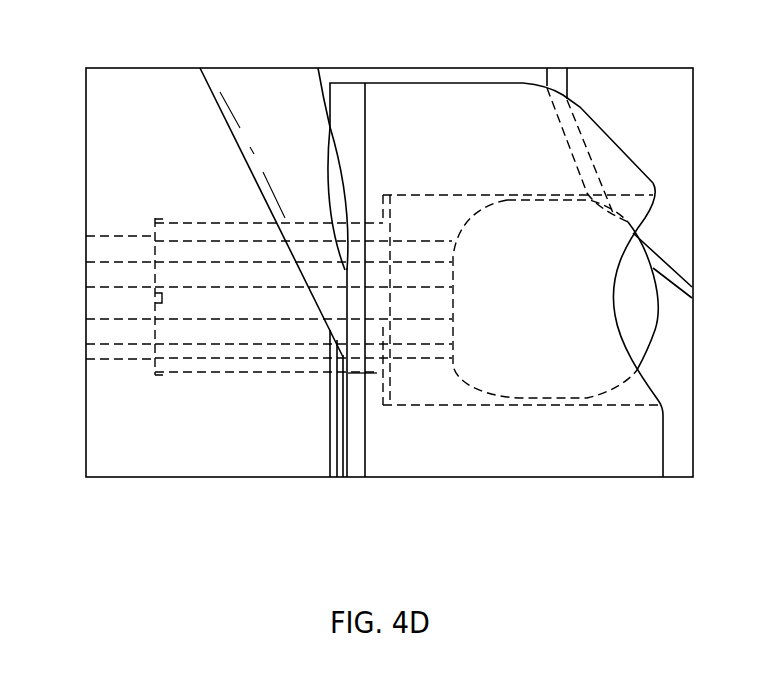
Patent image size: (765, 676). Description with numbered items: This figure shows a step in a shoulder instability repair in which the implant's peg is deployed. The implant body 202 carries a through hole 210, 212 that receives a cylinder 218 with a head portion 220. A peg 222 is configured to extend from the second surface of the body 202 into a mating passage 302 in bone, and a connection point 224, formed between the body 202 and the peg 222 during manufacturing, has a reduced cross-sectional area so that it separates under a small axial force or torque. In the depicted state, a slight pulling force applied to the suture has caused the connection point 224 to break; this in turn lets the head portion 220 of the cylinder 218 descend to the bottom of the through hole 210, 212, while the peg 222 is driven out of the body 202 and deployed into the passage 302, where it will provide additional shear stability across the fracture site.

The body 202 is at (628, 463).
The through hole 210 is at (453, 240).
The through hole 212 is at (548, 211).
The cylinder 218 is at (382, 333).
The head portion 220 is at (415, 212).
The peg 222 is at (243, 300).
The connection point 224 is at (157, 301).
The passage 302 is at (127, 350).